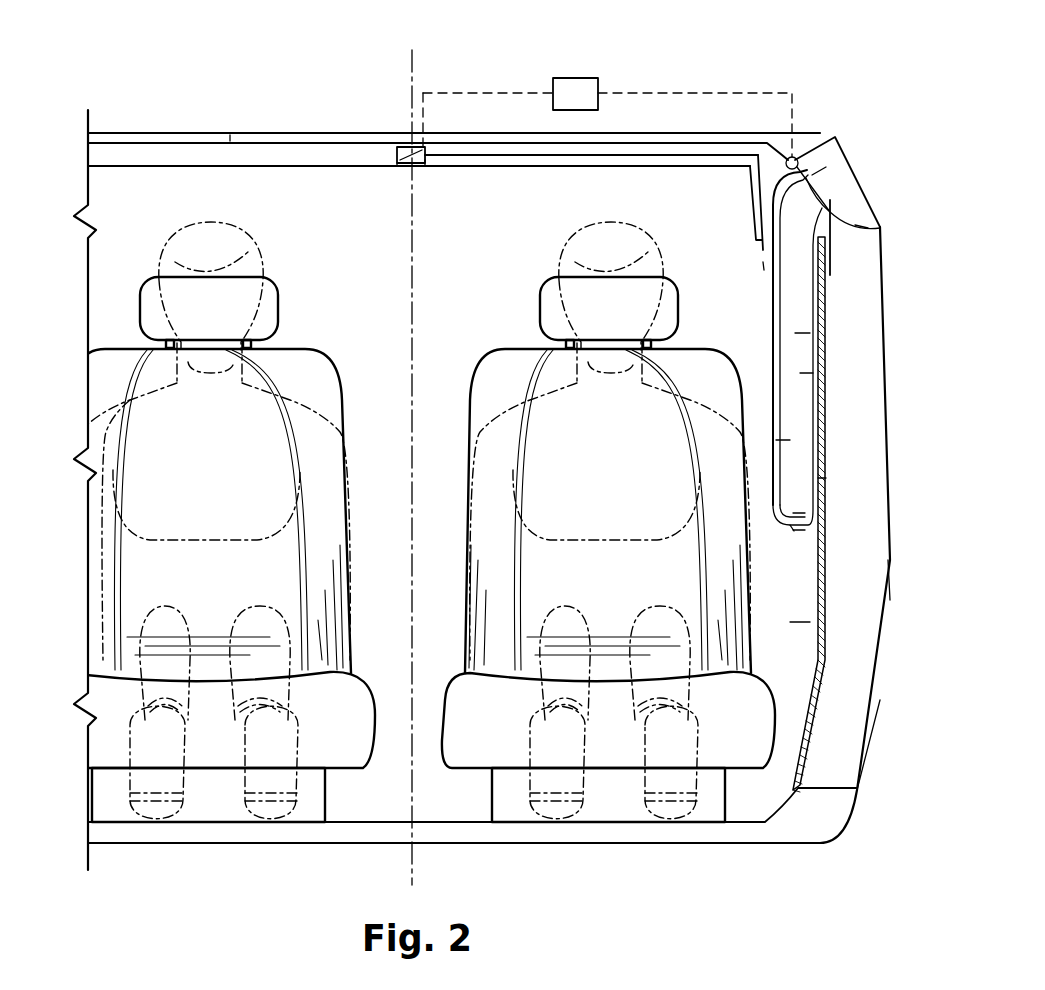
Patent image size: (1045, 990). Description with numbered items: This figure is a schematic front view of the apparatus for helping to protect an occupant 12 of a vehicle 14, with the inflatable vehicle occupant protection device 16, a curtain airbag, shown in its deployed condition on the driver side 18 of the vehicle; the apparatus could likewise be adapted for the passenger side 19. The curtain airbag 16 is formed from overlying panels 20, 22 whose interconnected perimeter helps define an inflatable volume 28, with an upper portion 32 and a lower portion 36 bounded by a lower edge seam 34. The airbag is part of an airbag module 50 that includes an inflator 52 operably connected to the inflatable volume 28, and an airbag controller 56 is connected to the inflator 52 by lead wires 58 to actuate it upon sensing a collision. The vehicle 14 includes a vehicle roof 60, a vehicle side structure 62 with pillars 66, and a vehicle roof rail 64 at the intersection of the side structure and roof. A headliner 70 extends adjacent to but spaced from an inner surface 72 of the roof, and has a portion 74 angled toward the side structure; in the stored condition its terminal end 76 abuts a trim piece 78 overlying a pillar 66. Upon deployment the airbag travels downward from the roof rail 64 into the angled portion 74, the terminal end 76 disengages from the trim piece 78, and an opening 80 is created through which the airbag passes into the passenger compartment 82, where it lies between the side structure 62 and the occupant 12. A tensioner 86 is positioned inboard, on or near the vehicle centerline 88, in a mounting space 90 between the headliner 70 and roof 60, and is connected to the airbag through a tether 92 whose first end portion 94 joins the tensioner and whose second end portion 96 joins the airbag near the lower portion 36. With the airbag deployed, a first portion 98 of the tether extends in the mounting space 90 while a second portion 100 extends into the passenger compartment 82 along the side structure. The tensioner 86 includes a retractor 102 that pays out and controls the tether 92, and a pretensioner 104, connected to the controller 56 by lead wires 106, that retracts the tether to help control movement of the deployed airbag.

The occupant 12 is at (564, 234).
The vehicle 14 is at (110, 133).
The inflatable vehicle occupant protection device 16 is at (800, 373).
The driver side 18 is at (795, 655).
The passenger side 19 is at (130, 295).
The panel 20 is at (780, 440).
The panel 22 is at (815, 410).
The inflatable volume 28 is at (792, 333).
The upper portion 32 is at (860, 225).
The lower edge seam 34 is at (795, 530).
The lower portion 36 is at (795, 513).
The airbag module 50 is at (826, 178).
The inflator 52 is at (815, 134).
The airbag controller 56 is at (578, 78).
The lead wires 58 is at (497, 93).
The vehicle roof 60 is at (230, 136).
The vehicle side structure 62 is at (865, 592).
The vehicle roof rail 64 is at (840, 200).
The pillar 66 is at (825, 262).
The headliner 70 is at (200, 167).
The inner surface 72 is at (200, 146).
The portion 74 is at (755, 195).
The terminal end 76 is at (755, 232).
The trim piece 78 is at (820, 478).
The opening 80 is at (764, 244).
The passenger compartment 82 is at (788, 622).
The tensioner 86 is at (400, 164).
The vehicle centerline 88 is at (413, 865).
The mounting space 90 is at (270, 167).
The tether 92 is at (658, 157).
The first end portion 94 is at (430, 160).
The second end portion 96 is at (793, 532).
The first portion 98 is at (592, 157).
The second portion 100 is at (772, 332).
The retractor 102 is at (400, 147).
The pretensioner 104 is at (430, 155).
The lead wires 106 is at (695, 93).